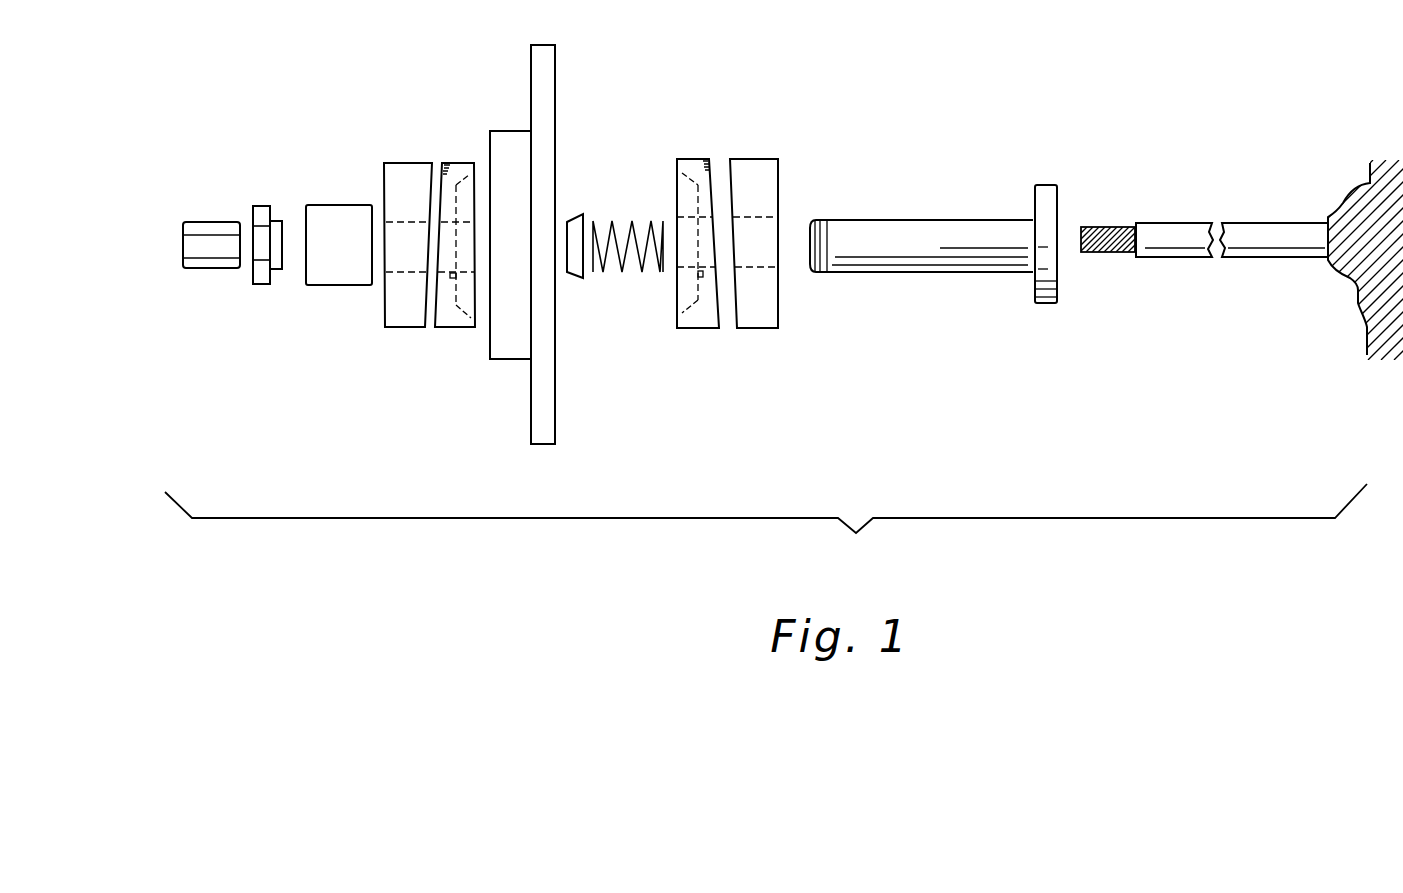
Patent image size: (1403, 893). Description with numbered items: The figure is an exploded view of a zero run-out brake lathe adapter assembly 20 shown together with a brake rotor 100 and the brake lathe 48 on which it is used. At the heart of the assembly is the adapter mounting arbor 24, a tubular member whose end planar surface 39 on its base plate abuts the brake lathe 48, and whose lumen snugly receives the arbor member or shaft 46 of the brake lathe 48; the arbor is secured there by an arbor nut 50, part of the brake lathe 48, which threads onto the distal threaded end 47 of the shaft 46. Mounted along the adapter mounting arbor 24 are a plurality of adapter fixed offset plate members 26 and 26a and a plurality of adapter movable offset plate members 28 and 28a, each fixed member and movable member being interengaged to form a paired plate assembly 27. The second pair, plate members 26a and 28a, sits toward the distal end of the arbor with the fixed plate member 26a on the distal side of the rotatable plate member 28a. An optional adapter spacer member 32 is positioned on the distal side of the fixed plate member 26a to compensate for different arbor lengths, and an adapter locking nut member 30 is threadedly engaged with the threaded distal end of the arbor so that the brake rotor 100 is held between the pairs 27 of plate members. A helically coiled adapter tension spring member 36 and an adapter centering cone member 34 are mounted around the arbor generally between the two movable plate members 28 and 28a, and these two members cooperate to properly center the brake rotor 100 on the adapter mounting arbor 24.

The zero run-out brake lathe adapter assembly 20 is at (766, 526).
The adapter mounting arbor 24 is at (930, 237).
The adapter fixed offset plate member 26 is at (760, 165).
The adapter fixed offset plate member 26a is at (403, 177).
The paired plate assembly 27 is at (437, 259).
The adapter movable offset plate member 28 is at (693, 160).
The adapter movable offset plate member 28a is at (460, 166).
The adapter locking nut member 30 is at (263, 206).
The adapter spacer member 32 is at (335, 217).
The adapter centering cone member 34 is at (570, 275).
The adapter tension spring member 36 is at (638, 265).
The end planar surface 39 is at (1058, 275).
The arbor member or shaft 46 is at (1240, 235).
The distal threaded end 47 is at (1110, 227).
The brake lathe 48 is at (1381, 250).
The arbor nut 50 is at (196, 222).
The brake rotor 100 is at (552, 97).